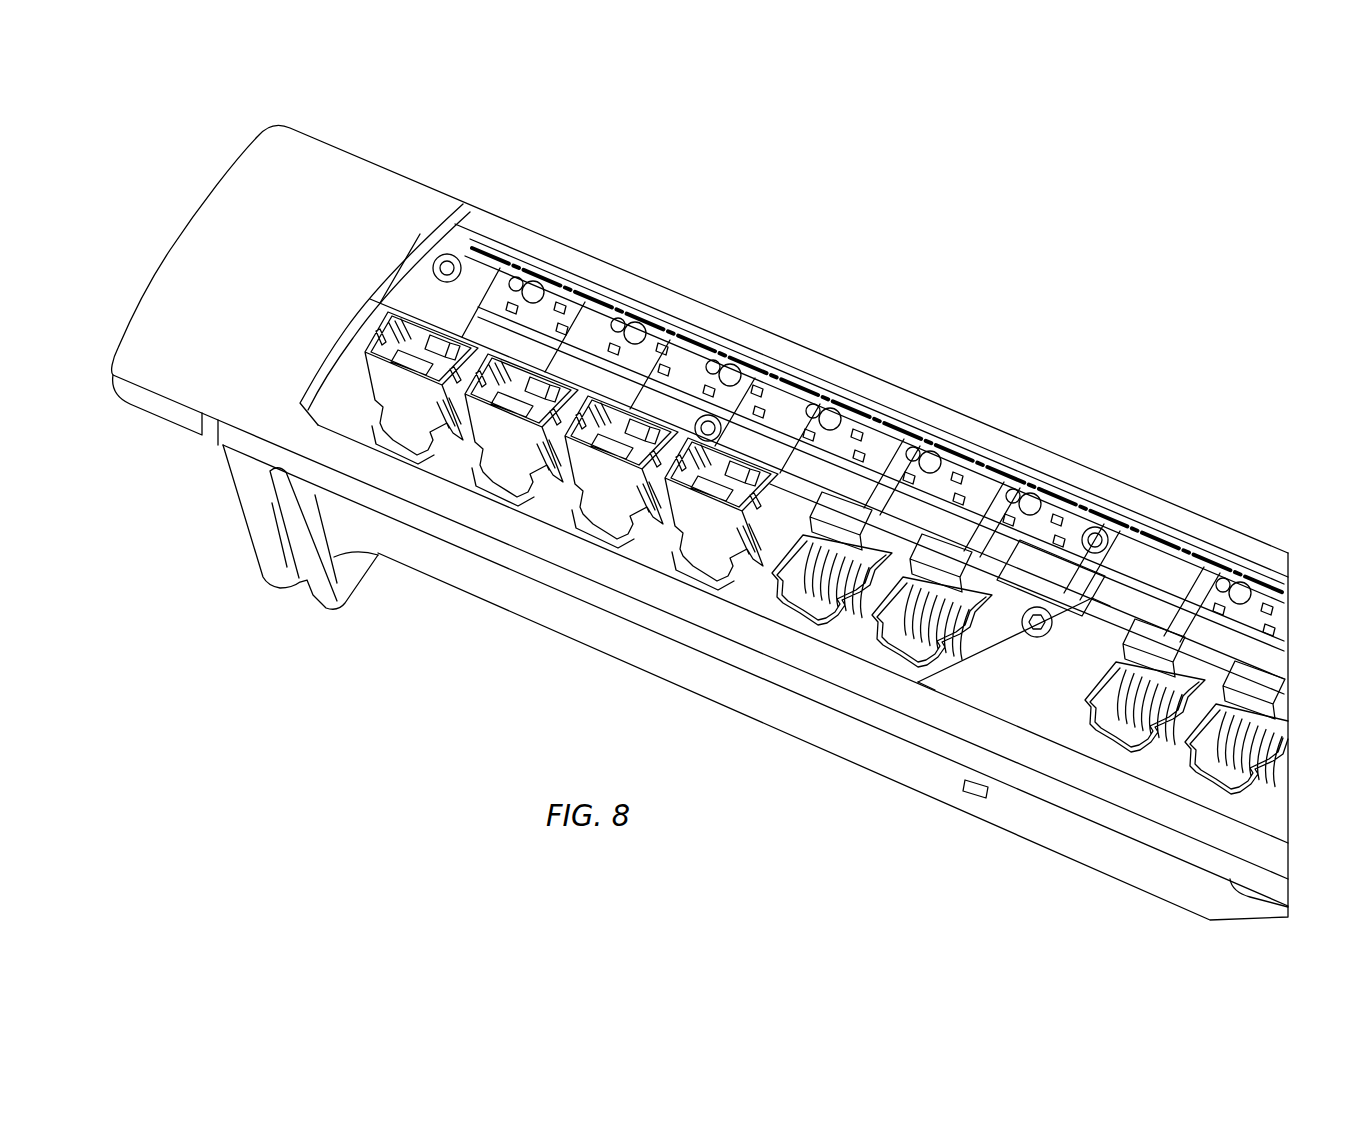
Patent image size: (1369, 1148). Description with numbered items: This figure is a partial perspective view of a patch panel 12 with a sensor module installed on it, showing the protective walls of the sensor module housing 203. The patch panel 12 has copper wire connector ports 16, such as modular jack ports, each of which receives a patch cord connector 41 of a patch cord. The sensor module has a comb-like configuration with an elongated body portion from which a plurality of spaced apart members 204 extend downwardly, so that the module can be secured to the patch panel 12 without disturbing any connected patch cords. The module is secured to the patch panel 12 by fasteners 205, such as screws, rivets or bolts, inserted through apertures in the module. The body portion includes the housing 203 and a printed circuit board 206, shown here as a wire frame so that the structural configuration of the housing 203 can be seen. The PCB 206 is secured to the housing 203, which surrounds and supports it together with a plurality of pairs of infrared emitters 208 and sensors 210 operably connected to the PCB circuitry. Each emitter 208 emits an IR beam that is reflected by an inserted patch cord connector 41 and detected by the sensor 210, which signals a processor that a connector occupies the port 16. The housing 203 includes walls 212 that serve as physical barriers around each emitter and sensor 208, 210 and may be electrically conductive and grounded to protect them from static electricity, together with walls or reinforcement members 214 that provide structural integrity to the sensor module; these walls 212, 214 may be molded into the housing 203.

The patch panel 12 is at (177, 383).
The patch cord connector 41 is at (427, 410).
The connector port 16 is at (1173, 753).
The housing 203 is at (880, 404).
The spaced apart member 204 is at (1003, 688).
The fastener 205 is at (1022, 635).
The printed circuit board 206 is at (1073, 503).
The infrared emitter 208 is at (650, 432).
The infrared sensor 210 is at (863, 513).
The wall 212 is at (950, 555).
The reinforcement member 214 is at (558, 340).